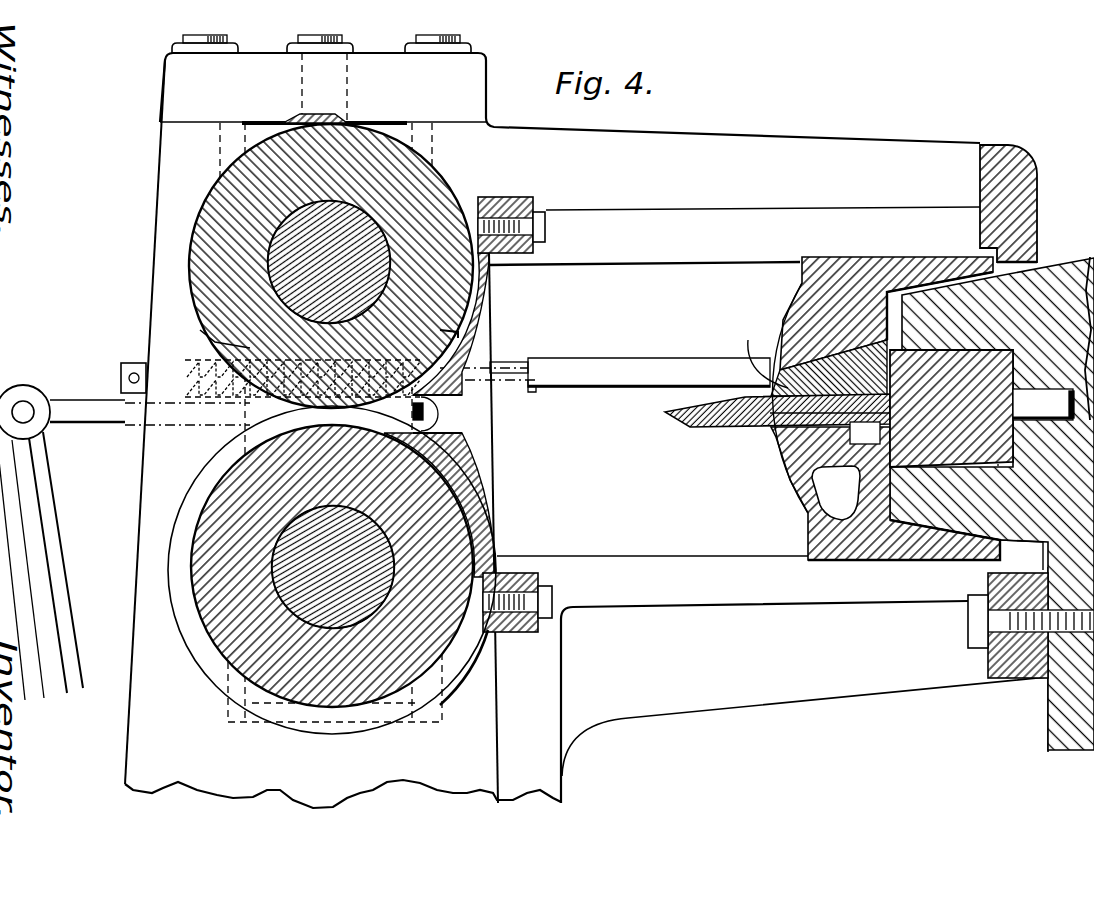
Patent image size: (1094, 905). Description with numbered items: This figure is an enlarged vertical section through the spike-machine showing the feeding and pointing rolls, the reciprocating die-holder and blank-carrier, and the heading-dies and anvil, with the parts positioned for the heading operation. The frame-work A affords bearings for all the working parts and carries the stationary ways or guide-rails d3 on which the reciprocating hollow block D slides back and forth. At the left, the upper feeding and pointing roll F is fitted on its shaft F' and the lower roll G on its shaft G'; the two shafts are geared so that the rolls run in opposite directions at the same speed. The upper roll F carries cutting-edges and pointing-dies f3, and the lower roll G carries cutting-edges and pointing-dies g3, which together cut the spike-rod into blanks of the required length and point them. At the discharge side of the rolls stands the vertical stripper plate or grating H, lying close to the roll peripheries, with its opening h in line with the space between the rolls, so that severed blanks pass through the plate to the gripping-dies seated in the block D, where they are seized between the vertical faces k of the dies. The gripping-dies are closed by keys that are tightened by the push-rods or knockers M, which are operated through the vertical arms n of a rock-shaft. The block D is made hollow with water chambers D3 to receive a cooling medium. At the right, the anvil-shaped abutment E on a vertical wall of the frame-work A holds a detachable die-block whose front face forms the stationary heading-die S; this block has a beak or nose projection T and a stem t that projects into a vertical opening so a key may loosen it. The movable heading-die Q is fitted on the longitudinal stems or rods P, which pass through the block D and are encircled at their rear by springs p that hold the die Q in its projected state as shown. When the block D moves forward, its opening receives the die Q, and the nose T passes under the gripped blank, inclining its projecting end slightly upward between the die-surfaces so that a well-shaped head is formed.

The frame-work A is at (609, 421).
The stationary ways or guide-rails d3 is at (734, 401).
The upper feeding and pointing roll F is at (331, 266).
The shaft of upper roll F' is at (329, 262).
The cutting-edges and pointing-dies of upper roll f3 is at (333, 116).
The lower feeding and pointing roll G is at (332, 566).
The shaft of lower roll G' is at (333, 567).
The cutting-edges and pointing-dies of lower roll g3 is at (214, 492).
The springs p is at (195, 363).
The stripper plate or grating H is at (492, 346).
The opening in stripper plate h is at (437, 414).
The rod r is at (630, 375).
The push-rods or knockers M is at (84, 405).
The vertical arms of rock-shaft n is at (41, 566).
The stationary die or anvil abutment E is at (992, 503).
The longitudinal stems or rods P is at (858, 263).
The vertical faces of gripping-dies k is at (798, 385).
The stationary heading-die S is at (951, 408).
The reciprocating hollow block (die-holder and blank-carrier) D is at (907, 435).
The water chambers D3 is at (836, 493).
The beak or nose projection T is at (865, 433).
The stem of die-block t is at (1043, 404).
The movable heading-die Q is at (759, 356).